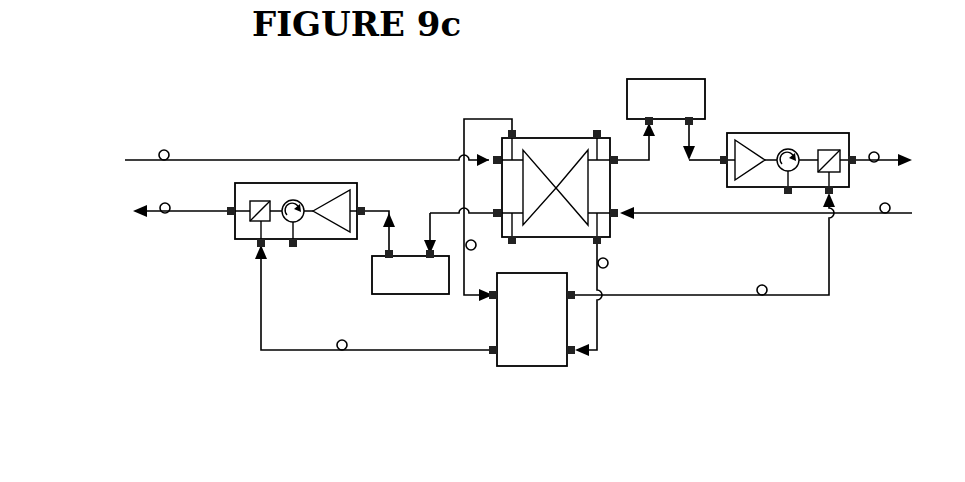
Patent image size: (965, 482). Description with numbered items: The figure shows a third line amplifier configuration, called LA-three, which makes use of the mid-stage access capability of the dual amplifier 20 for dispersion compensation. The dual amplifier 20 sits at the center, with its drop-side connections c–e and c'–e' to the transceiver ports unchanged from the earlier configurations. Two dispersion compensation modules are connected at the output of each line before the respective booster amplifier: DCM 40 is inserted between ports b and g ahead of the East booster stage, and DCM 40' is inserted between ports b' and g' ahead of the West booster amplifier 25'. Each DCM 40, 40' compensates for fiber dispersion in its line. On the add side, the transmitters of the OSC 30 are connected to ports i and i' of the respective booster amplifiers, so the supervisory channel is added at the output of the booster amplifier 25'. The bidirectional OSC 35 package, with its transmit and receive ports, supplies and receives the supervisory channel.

The OSC 30 is at (496, 192).
The dual amplifier 20 is at (577, 138).
The dispersion compensation module 40 is at (684, 84).
The bidirectional OSC 35 is at (785, 133).
The booster amplifier 25' is at (296, 249).
The dispersion compensation module 40' is at (410, 294).